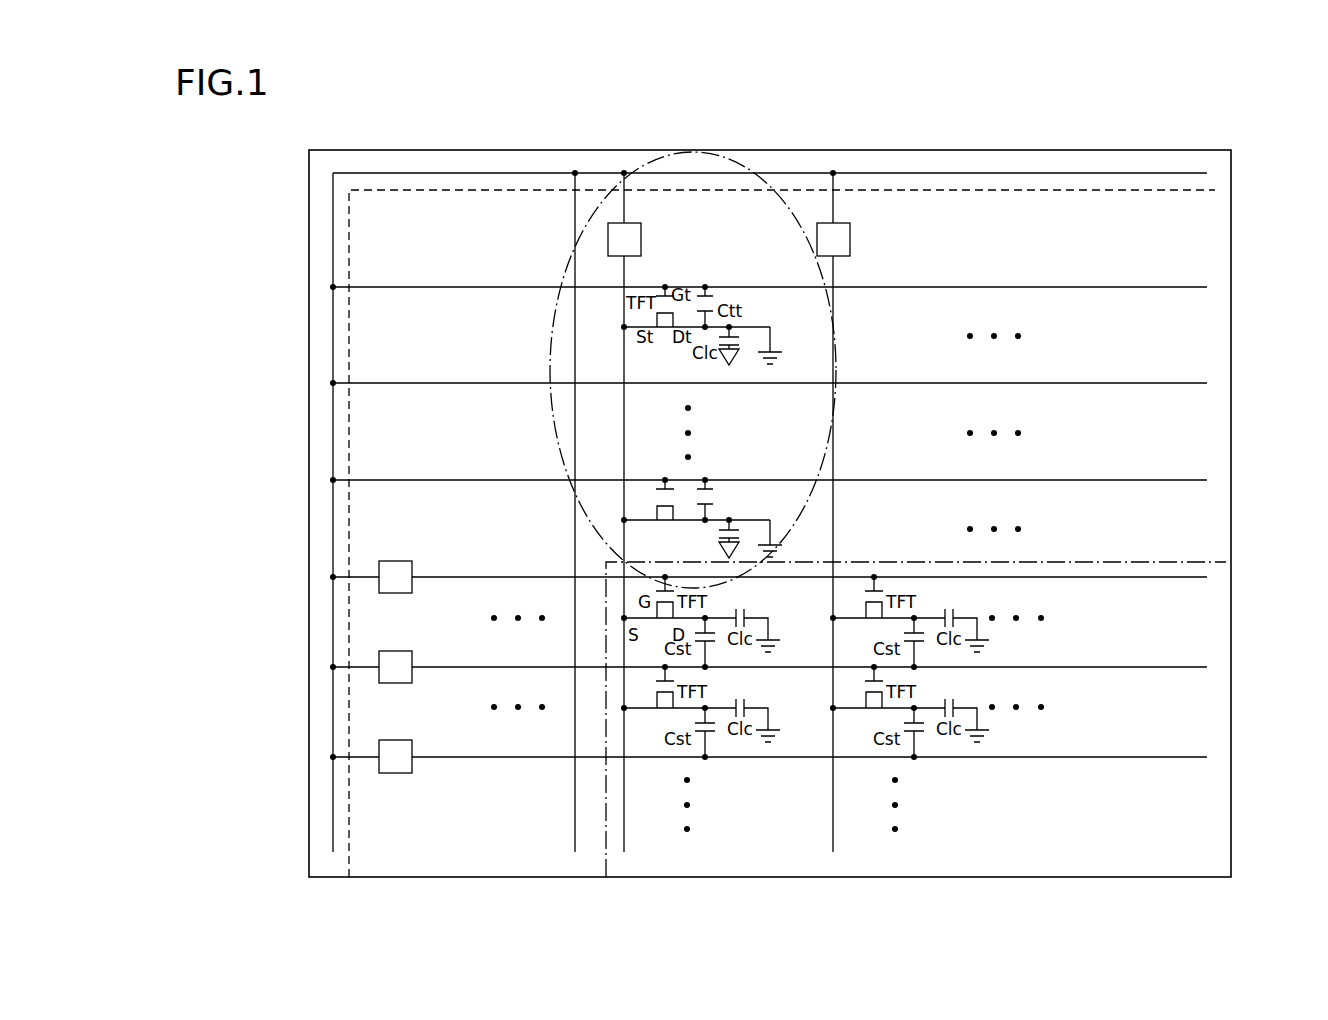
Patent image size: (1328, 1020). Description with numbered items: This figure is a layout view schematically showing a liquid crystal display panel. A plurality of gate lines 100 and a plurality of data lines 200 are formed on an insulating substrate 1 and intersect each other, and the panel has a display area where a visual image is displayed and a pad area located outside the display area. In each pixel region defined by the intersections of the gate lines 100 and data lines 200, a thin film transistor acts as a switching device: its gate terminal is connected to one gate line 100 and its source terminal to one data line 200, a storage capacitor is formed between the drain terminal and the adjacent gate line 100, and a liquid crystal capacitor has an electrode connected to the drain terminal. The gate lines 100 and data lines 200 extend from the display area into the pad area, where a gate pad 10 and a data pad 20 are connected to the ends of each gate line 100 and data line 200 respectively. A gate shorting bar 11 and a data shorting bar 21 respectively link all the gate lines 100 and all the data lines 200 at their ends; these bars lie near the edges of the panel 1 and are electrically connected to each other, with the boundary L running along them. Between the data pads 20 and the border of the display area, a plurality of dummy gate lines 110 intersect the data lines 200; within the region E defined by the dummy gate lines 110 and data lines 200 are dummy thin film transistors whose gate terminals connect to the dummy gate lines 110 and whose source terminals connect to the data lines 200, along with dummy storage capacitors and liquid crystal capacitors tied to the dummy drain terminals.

The insulating substrate 1 is at (1231, 352).
The gate pad 10 is at (379, 593).
The gate shorting bar 11 is at (332, 527).
The data pad 20 is at (643, 228).
The data shorting bar 21 is at (448, 173).
The gate line 100 is at (462, 668).
The dummy gate line 110 is at (952, 282).
The data line 200 is at (624, 838).
The liquid crystal region boundary L is at (1215, 190).
The test pixel region E is at (735, 163).